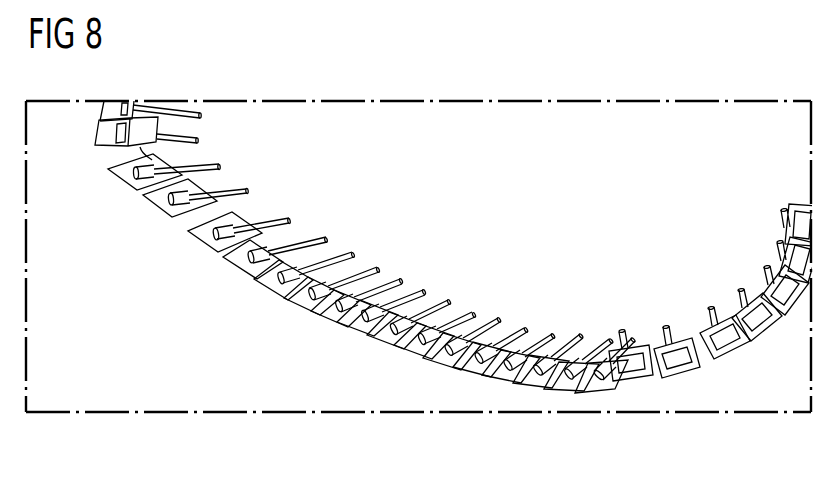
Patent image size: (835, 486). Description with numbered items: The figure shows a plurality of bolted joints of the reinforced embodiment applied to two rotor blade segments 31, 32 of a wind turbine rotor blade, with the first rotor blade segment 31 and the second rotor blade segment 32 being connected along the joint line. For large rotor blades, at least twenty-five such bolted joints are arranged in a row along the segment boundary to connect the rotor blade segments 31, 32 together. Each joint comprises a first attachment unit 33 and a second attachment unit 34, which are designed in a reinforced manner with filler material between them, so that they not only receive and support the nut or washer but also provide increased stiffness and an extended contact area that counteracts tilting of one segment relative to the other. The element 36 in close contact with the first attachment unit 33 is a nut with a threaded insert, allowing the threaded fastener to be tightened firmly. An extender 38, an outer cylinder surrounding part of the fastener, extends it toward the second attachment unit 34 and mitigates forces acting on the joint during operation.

The first rotor blade segment 31 is at (273, 398).
The second rotor blade segment 32 is at (490, 117).
The first attachment unit 33 is at (160, 199).
The second attachment unit 34 is at (207, 200).
The nut with a threaded insert 36 is at (197, 232).
The extender 38 is at (233, 190).